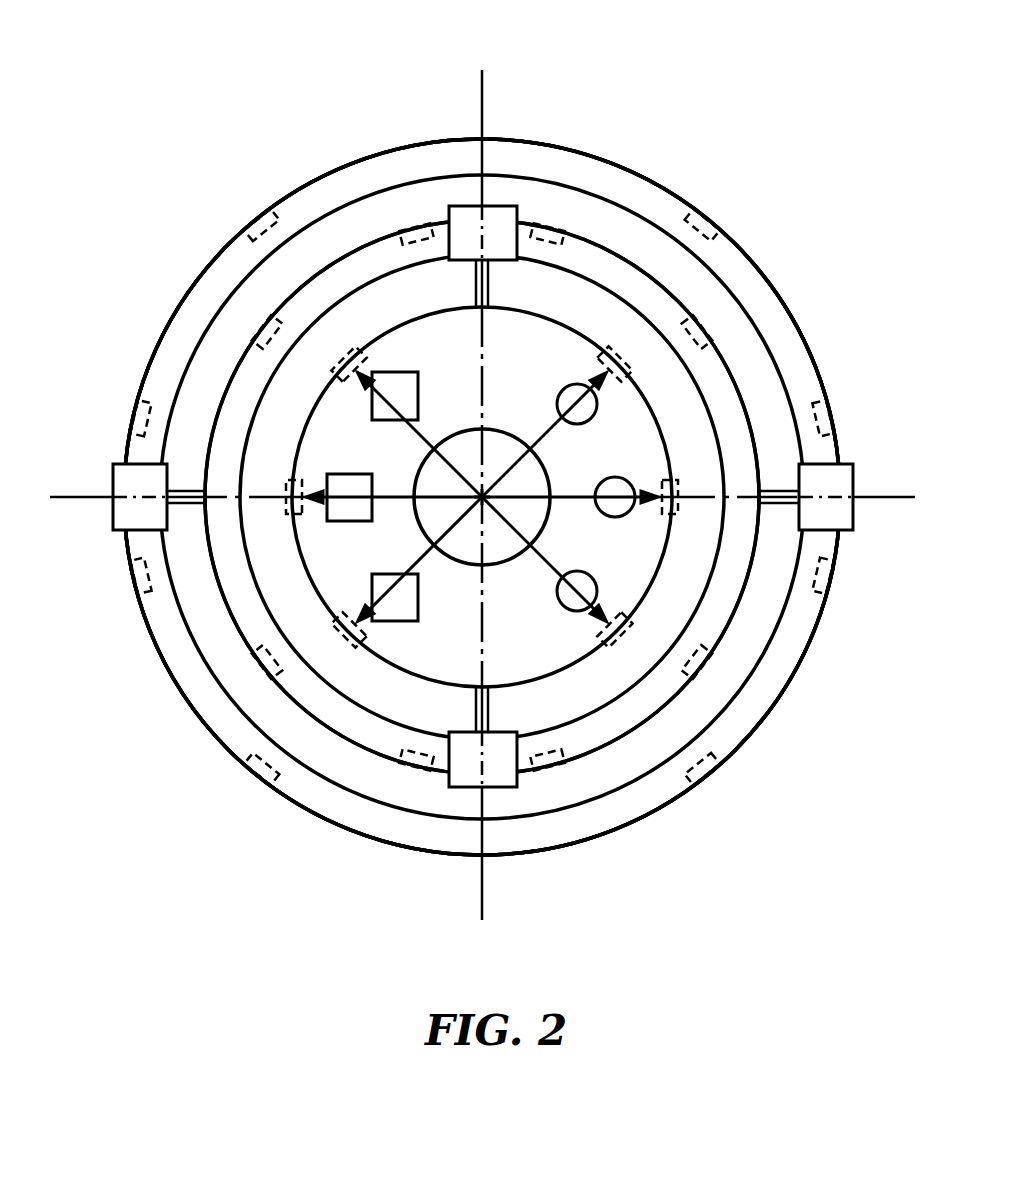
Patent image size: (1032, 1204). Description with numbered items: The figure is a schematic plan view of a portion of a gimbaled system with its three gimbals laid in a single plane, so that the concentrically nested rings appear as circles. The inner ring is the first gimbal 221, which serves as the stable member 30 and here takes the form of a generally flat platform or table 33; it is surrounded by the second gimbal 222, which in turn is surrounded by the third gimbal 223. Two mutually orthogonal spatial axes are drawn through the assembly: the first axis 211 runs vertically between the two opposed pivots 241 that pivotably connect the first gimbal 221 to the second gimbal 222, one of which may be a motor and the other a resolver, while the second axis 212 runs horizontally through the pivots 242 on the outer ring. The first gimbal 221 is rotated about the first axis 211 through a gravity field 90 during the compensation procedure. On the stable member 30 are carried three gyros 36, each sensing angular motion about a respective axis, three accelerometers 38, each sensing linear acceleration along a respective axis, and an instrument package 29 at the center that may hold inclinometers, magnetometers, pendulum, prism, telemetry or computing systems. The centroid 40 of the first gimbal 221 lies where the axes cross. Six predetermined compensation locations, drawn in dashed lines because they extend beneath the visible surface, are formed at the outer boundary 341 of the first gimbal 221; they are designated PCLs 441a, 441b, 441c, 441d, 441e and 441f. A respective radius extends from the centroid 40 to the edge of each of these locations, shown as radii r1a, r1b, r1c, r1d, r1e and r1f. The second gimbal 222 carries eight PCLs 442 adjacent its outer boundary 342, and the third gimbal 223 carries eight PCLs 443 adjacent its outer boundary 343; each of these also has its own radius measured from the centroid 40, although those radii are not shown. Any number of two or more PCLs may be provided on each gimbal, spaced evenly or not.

The gravity field 90 is at (482, 474).
The first spatial axis 211 is at (479, 103).
The second spatial axis 212 is at (78, 492).
The first gimbal 221 is at (690, 790).
The stable member 30 is at (482, 497).
The table 33 is at (482, 497).
The second gimbal 222 is at (593, 737).
The third gimbal 223 is at (445, 838).
The pivots 241 is at (497, 218).
The pivots 242 is at (118, 512).
The instrument package 29 is at (467, 549).
The outer boundary of first gimbal 341 is at (593, 338).
The outer boundary of second gimbal 342 is at (686, 296).
The outer boundary of third gimbal 343 is at (757, 262).
The gyro 36 is at (565, 394).
The accelerometer 38 is at (400, 390).
The centroid 40 is at (486, 484).
The first predetermined compensation location 441a is at (625, 360).
The second predetermined compensation location 441b is at (677, 490).
The third predetermined compensation location 441c is at (625, 632).
The fourth predetermined compensation location 441d is at (355, 628).
The fifth predetermined compensation location 441e is at (292, 502).
The sixth predetermined compensation location 441f is at (360, 365).
The predetermined compensation locations of second gimbal 442 is at (410, 225).
The predetermined compensation locations of third gimbal 443 is at (258, 215).
The first radius r1a is at (548, 432).
The second radius r1b is at (592, 500).
The third radius r1c is at (535, 550).
The fourth radius r1d is at (410, 569).
The fifth radius r1e is at (400, 496).
The sixth radius r1f is at (428, 435).